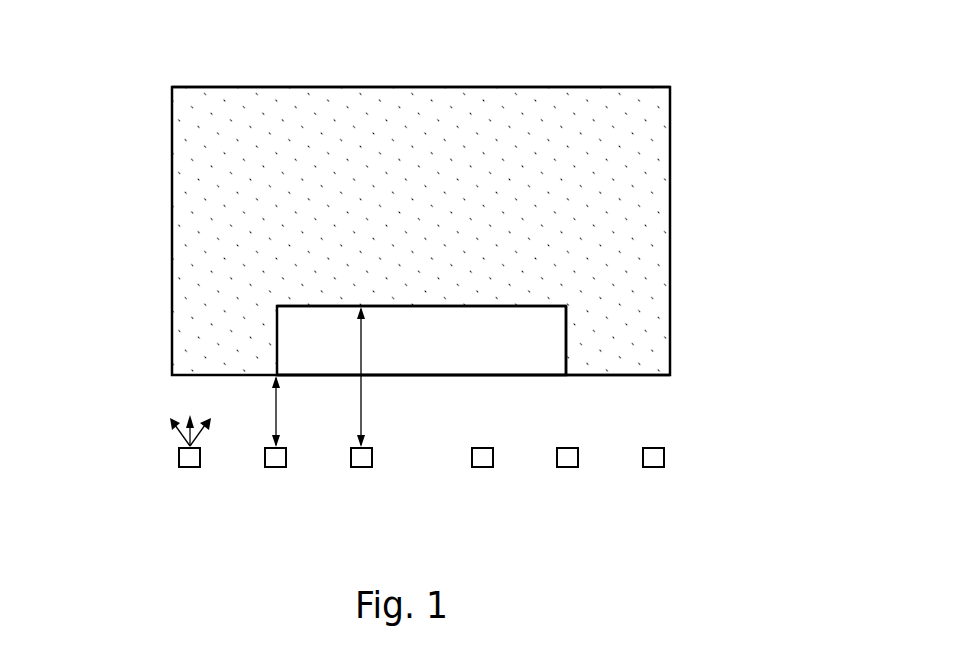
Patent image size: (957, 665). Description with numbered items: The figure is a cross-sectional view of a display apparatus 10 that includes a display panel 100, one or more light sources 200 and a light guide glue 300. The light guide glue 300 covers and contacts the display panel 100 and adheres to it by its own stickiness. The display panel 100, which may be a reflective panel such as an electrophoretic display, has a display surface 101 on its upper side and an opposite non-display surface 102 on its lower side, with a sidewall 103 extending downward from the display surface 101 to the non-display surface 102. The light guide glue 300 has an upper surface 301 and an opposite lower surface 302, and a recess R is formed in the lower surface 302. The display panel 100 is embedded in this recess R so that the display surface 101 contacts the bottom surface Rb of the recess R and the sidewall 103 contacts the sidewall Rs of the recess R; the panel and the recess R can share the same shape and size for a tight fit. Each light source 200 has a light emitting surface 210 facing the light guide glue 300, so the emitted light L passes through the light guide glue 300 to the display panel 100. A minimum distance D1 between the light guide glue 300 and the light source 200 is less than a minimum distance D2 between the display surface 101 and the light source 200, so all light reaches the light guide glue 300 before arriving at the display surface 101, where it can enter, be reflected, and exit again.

The display apparatus 10 is at (83, 36).
The display panel 100 is at (443, 355).
The display surface 101 is at (440, 306).
The non-display surface 102 is at (533, 376).
The sidewall 103 is at (567, 341).
The light source 200 is at (421, 499).
The light emitting surface 210 is at (145, 457).
The light guide glue 300 is at (225, 107).
The upper surface 301 is at (612, 87).
The lower surface 302 is at (658, 375).
The light L is at (154, 416).
The recess R is at (184, 289).
The bottom surface of the recess Rb is at (207, 234).
The sidewall of the recess Rs is at (187, 342).
The minimum distance between the light guide glue and the light source D1 is at (295, 411).
The minimum distance between the display surface and the light source D2 is at (380, 377).